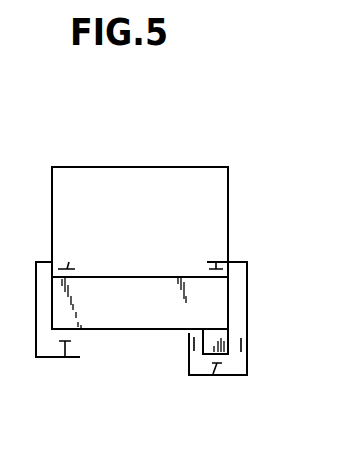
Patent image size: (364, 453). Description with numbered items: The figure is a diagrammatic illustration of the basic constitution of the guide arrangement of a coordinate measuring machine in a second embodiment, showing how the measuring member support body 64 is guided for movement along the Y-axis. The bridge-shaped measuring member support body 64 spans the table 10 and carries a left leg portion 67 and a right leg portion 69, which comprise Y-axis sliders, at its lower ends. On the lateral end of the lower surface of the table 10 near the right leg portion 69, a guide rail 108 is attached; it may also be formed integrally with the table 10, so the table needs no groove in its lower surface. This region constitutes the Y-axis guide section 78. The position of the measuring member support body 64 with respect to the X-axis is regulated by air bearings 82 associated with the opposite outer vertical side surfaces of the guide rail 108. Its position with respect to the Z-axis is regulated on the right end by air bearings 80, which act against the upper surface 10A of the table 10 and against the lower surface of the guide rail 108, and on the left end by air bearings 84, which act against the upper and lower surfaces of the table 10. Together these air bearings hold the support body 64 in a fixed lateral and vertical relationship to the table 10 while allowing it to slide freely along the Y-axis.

The measuring member support body 64 is at (145, 167).
The table 10 is at (153, 275).
The upper surface of the table 10A is at (110, 275).
The left leg portion 67 is at (36, 290).
The right leg portion 69 is at (247, 303).
The air bearings 84 is at (69, 262).
The air bearings 80 is at (216, 262).
The air bearings 82 is at (189, 348).
The guide rail 108 is at (228, 356).
The Y-axis guide section 78 is at (257, 369).